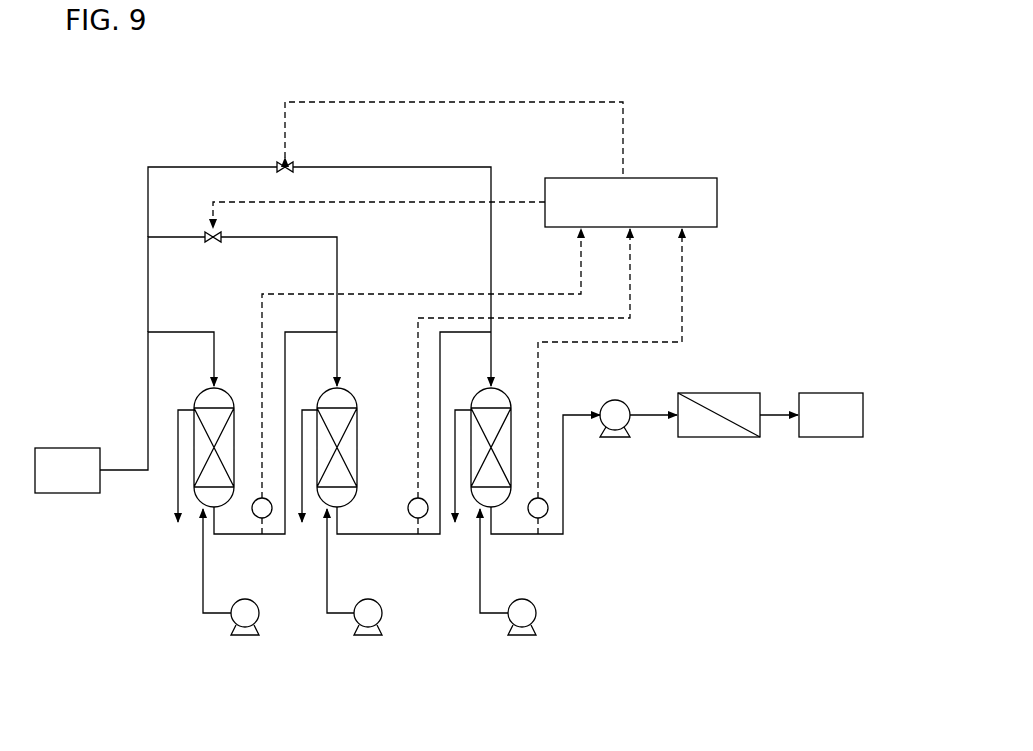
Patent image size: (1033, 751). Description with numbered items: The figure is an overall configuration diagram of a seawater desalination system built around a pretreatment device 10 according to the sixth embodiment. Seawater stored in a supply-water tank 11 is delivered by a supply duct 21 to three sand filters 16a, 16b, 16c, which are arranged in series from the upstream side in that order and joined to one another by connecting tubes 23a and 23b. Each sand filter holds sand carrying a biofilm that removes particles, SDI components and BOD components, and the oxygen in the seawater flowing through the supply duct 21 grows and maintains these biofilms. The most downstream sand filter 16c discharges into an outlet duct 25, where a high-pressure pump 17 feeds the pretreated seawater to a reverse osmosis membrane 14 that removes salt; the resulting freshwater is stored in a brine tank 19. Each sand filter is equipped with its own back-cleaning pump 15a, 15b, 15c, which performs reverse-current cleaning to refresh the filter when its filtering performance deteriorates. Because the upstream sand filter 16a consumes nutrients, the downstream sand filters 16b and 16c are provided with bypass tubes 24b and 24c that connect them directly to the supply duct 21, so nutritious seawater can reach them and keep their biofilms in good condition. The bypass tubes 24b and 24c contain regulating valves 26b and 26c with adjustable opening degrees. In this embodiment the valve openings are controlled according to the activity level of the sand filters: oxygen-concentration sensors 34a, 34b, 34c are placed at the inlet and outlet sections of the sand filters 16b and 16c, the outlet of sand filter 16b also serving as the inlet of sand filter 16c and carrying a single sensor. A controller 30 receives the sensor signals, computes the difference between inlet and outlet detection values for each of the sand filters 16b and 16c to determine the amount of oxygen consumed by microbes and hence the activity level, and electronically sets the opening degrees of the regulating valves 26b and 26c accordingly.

The pretreatment device 10 is at (745, 160).
The supply-water tank 11 is at (44, 448).
The supply duct 21 is at (148, 437).
The bypass tube 24b is at (290, 240).
The bypass tube 24c is at (376, 165).
The regulating valve 26b is at (208, 233).
The regulating valve 26c is at (279, 163).
The controller 30 is at (717, 203).
The sand filter 16a is at (226, 393).
The sand filter 16b is at (348, 393).
The sand filter 16c is at (503, 393).
The connecting tube 23a is at (246, 535).
The connecting tube 23b is at (372, 535).
The outlet duct 25 is at (563, 478).
The oxygen-concentration sensor 34a is at (272, 516).
The oxygen-concentration sensor 34b is at (427, 516).
The oxygen-concentration sensor 34c is at (547, 515).
The back-cleaning pump 15a is at (259, 617).
The back-cleaning pump 15b is at (382, 617).
The back-cleaning pump 15c is at (536, 617).
The high-pressure pump 17 is at (624, 400).
The reverse osmosis membrane 14 is at (738, 393).
The brine tank 19 is at (835, 393).